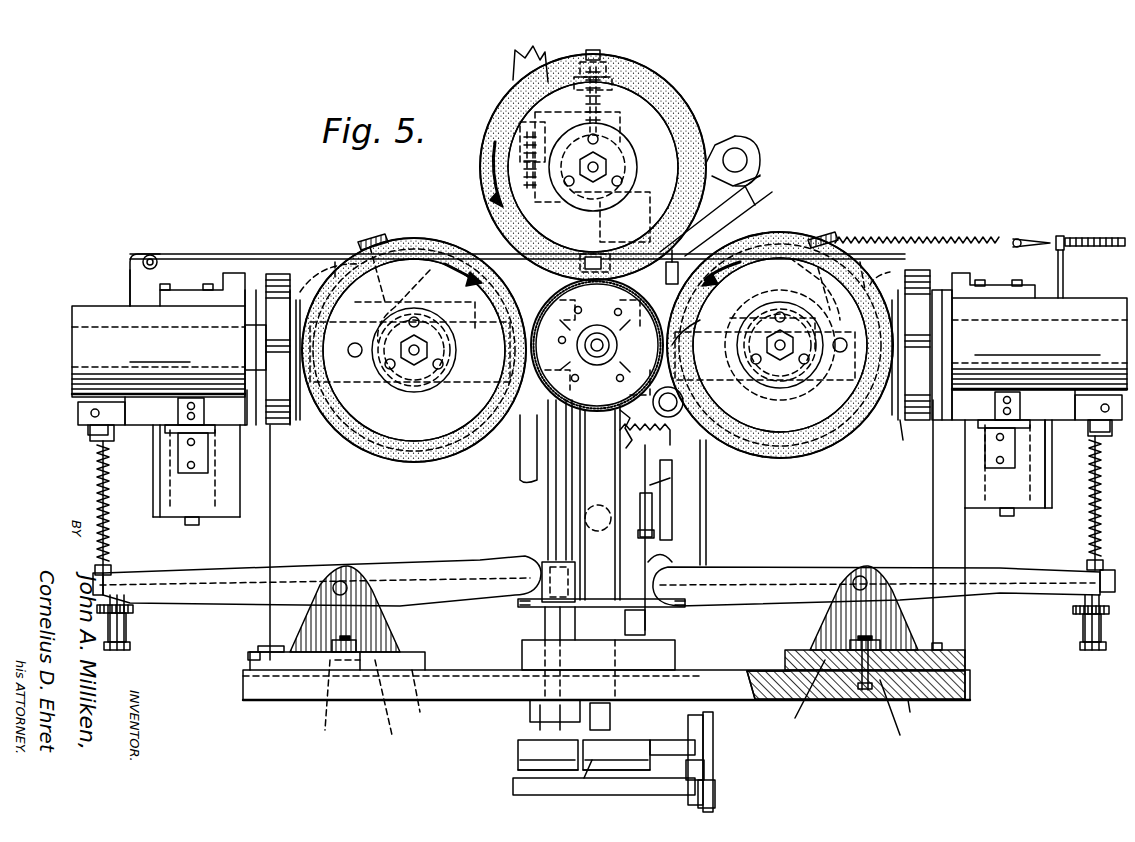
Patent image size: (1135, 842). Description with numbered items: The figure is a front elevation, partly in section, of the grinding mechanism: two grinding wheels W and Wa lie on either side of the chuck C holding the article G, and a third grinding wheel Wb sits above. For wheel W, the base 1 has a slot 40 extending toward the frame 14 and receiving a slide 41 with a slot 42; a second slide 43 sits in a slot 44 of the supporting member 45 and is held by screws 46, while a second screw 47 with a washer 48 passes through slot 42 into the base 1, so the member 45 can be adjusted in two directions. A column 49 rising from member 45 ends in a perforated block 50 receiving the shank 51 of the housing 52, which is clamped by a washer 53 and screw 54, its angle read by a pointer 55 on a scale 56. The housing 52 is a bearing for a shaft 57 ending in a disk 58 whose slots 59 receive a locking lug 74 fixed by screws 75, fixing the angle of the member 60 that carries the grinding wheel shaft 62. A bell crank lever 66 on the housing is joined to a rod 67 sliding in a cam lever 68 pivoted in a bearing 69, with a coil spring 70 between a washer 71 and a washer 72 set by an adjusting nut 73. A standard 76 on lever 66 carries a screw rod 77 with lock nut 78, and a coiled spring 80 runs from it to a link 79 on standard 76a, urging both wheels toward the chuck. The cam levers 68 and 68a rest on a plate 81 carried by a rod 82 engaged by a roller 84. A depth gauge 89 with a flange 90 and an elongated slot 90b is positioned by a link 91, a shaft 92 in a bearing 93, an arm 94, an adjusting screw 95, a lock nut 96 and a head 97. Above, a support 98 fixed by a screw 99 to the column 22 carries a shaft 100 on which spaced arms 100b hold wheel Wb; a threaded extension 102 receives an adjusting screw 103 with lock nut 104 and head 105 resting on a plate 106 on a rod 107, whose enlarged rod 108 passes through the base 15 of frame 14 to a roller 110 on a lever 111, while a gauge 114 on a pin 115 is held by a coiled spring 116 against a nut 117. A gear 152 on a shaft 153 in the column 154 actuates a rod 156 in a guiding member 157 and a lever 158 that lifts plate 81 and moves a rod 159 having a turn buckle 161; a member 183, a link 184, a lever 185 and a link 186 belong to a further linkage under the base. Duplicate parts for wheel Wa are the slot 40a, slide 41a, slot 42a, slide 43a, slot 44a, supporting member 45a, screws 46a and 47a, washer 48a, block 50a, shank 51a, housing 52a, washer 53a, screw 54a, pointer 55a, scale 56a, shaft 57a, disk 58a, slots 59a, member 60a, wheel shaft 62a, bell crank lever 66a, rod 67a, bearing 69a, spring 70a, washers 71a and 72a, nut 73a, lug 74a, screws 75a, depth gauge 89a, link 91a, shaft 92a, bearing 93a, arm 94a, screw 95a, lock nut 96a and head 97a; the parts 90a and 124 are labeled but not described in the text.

The base 1 is at (243, 697).
The frame 14 is at (606, 574).
The base of the frame 15 is at (665, 652).
The column 22 is at (611, 262).
The slot 40 is at (775, 669).
The slide 41 is at (803, 695).
The slot 42 is at (897, 714).
The second slide 43 is at (911, 714).
The slot 44 is at (970, 661).
The supporting member 45 is at (790, 650).
The screws 46 is at (965, 632).
The second screw 47 is at (872, 650).
The washer 48 is at (855, 640).
The column 49 is at (933, 532).
The perforated block 50 is at (1045, 464).
The shank 51 is at (1040, 512).
The housing 52 is at (1118, 306).
The clamping washer 53 is at (978, 512).
The screw 54 is at (1005, 518).
The pointer 55 is at (1020, 406).
The scale 56 is at (985, 437).
The shaft 57 is at (940, 355).
The disk 58 is at (905, 422).
The slots 59 is at (956, 339).
The member 60 is at (898, 402).
The grinding wheel shaft 62 is at (780, 352).
The bell crank lever 66 is at (1085, 421).
The rod 67 is at (1102, 486).
The cam lever 68 is at (790, 566).
The bearing 69 is at (850, 572).
The coil spring 70 is at (1100, 560).
The washer 71 is at (1110, 570).
The washer 72 is at (1100, 602).
The adjusting nut 73 is at (1102, 632).
The locking lug 74 is at (955, 273).
The screws 75 is at (990, 282).
The standard 76 is at (1064, 265).
The screw rod 77 is at (1080, 238).
The lock nut 78 is at (1060, 236).
The link 79 is at (168, 255).
The coiled spring 80 is at (890, 241).
The plate 81 is at (518, 605).
The rod 82 is at (612, 717).
The roller 84 is at (600, 782).
The depth gauge 89 is at (759, 342).
The flange 90 is at (676, 393).
The wheel rim 90a is at (414, 350).
The elongated slot 90b is at (636, 339).
The link 91 is at (784, 345).
The shaft 92 is at (876, 271).
The bearing 93 is at (886, 279).
The arm 94 is at (798, 279).
The adjusting screw 95 is at (772, 318).
The lock nut 96 is at (836, 284).
The head 97 is at (820, 242).
The support 98 is at (720, 230).
The screw 99 is at (680, 270).
The shaft 100 is at (748, 152).
The spaced arms 100b is at (712, 158).
The threaded extension 102 is at (515, 142).
The adjusting screw 103 is at (516, 177).
The lock nut 104 is at (577, 149).
The head 105 is at (533, 69).
The plate 106 is at (612, 217).
The rod 107 is at (550, 528).
The enlarged rod 108 is at (543, 567).
The roller 110 is at (515, 782).
The lever 111 is at (520, 750).
The gauge 114 is at (598, 154).
The pin 115 is at (610, 76).
The coiled spring 116 is at (575, 99).
The nut 117 is at (606, 60).
The sleeve 124 is at (545, 622).
The gear 152 is at (704, 452).
The shaft 153 is at (641, 429).
The standard or column 154 is at (690, 506).
The rod 156 is at (643, 441).
The guiding member 157 is at (692, 485).
The lever 158 is at (653, 624).
The rod or link 159 is at (672, 557).
The turn buckle 161 is at (652, 522).
The member 183 is at (671, 736).
The rod or link 184 is at (713, 714).
The lever 185 is at (704, 772).
The rod or link 186 is at (715, 797).
The chuck C is at (584, 355).
The article G is at (686, 324).
The grinding wheel W is at (785, 240).
The grinding wheel Wa is at (345, 280).
The third grinding wheel Wb is at (655, 97).
The slot 40a is at (432, 699).
The slide 41a is at (396, 707).
The slot 42a is at (320, 702).
The second slide 43a is at (243, 679).
The slot 44a is at (258, 650).
The supporting member 45a is at (415, 656).
The screws 46a is at (250, 652).
The second screw 47a is at (385, 648).
The washer 48a is at (360, 640).
The perforated block 50a is at (153, 466).
The shank 51a is at (215, 490).
The housing 52a is at (75, 308).
The clamping washer 53a is at (220, 522).
The screw 54a is at (188, 525).
The pointer 55a is at (204, 411).
The scale 56a is at (208, 440).
The shaft 57a is at (255, 347).
The disk 58a is at (300, 420).
The slots 59a is at (275, 300).
The member 60a is at (296, 405).
The grinding wheel shaft 62a is at (414, 357).
The bell crank lever 66a is at (78, 412).
The rod 67a is at (97, 472).
The cam lever 68a is at (475, 565).
The bearing 69a is at (332, 580).
The coil spring 70a is at (105, 568).
The washer 71a is at (112, 578).
The washer 72a is at (125, 598).
The adjusting nut 73a is at (130, 634).
The locking lug 74a is at (232, 280).
The screws 75a is at (205, 287).
The standard 76a is at (128, 291).
The depth gauge 89a is at (424, 360).
The link 91a is at (406, 354).
The shaft 92a is at (338, 265).
The bearing 93a is at (325, 275).
The arm 94a is at (430, 270).
The adjusting screw 95a is at (415, 304).
The lock nut 96a is at (400, 292).
The head 97a is at (372, 242).